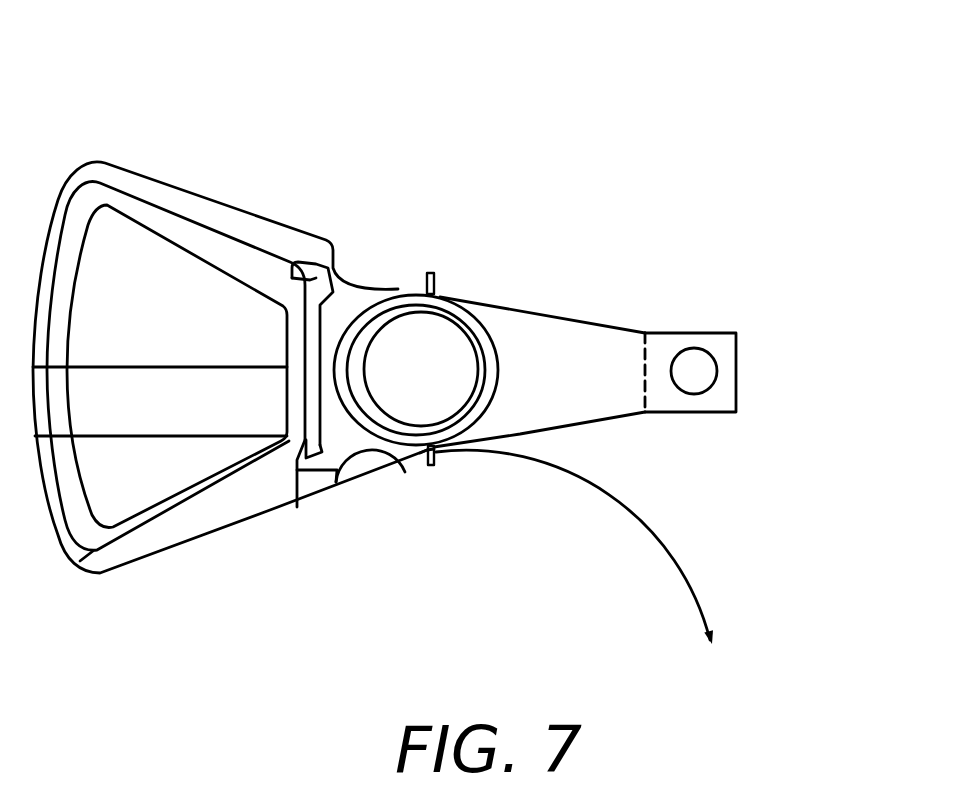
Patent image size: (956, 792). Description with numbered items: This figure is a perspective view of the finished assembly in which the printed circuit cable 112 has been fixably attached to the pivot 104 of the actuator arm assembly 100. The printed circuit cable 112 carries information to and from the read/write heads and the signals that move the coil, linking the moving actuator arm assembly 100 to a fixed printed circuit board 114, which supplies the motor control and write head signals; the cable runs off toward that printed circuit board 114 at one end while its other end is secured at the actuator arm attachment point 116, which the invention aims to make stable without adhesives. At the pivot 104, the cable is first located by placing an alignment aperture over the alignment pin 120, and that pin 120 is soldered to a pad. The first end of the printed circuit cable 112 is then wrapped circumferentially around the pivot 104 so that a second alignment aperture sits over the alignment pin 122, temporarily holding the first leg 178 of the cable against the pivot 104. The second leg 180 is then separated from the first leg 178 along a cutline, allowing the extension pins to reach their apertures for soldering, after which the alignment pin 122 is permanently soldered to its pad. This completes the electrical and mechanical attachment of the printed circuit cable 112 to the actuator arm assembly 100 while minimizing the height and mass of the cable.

The actuator arm assembly 100 is at (384, 75).
The pivot 104 is at (490, 330).
The printed circuit cable 112 is at (672, 557).
The printed circuit board 114 is at (735, 673).
The actuator arm attachment point 116 is at (440, 472).
The alignment pin 120 is at (435, 273).
The alignment pin 122 is at (432, 466).
The first leg 178 is at (352, 318).
The second leg 180 is at (355, 457).